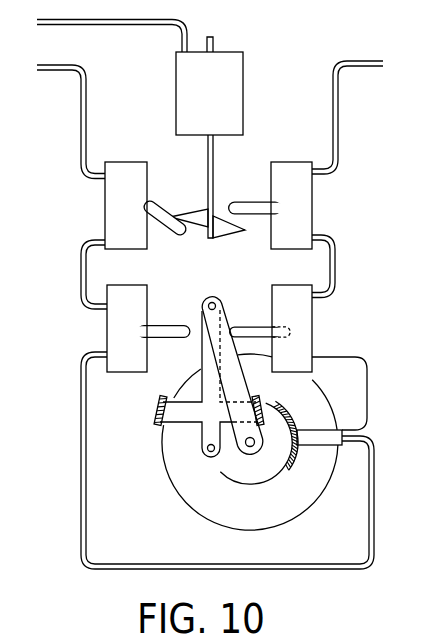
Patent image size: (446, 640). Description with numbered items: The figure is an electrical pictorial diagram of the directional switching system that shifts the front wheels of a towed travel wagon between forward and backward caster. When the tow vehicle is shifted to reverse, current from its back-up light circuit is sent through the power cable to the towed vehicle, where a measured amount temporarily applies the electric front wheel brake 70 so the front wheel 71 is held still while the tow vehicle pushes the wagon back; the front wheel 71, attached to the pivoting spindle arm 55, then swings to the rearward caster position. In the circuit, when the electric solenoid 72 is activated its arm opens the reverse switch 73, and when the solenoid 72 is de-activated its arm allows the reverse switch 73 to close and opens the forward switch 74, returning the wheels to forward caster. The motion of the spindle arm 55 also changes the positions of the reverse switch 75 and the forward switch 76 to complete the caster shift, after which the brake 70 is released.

The spindle arm 55 is at (214, 356).
The electric front wheel brake 70 is at (318, 427).
The front wheel 71 is at (300, 513).
The electric solenoid 72 is at (176, 107).
The reverse switch 73 is at (105, 198).
The forward switch 74 is at (312, 221).
The reverse switch 75 is at (107, 330).
The forward switch 76 is at (313, 334).